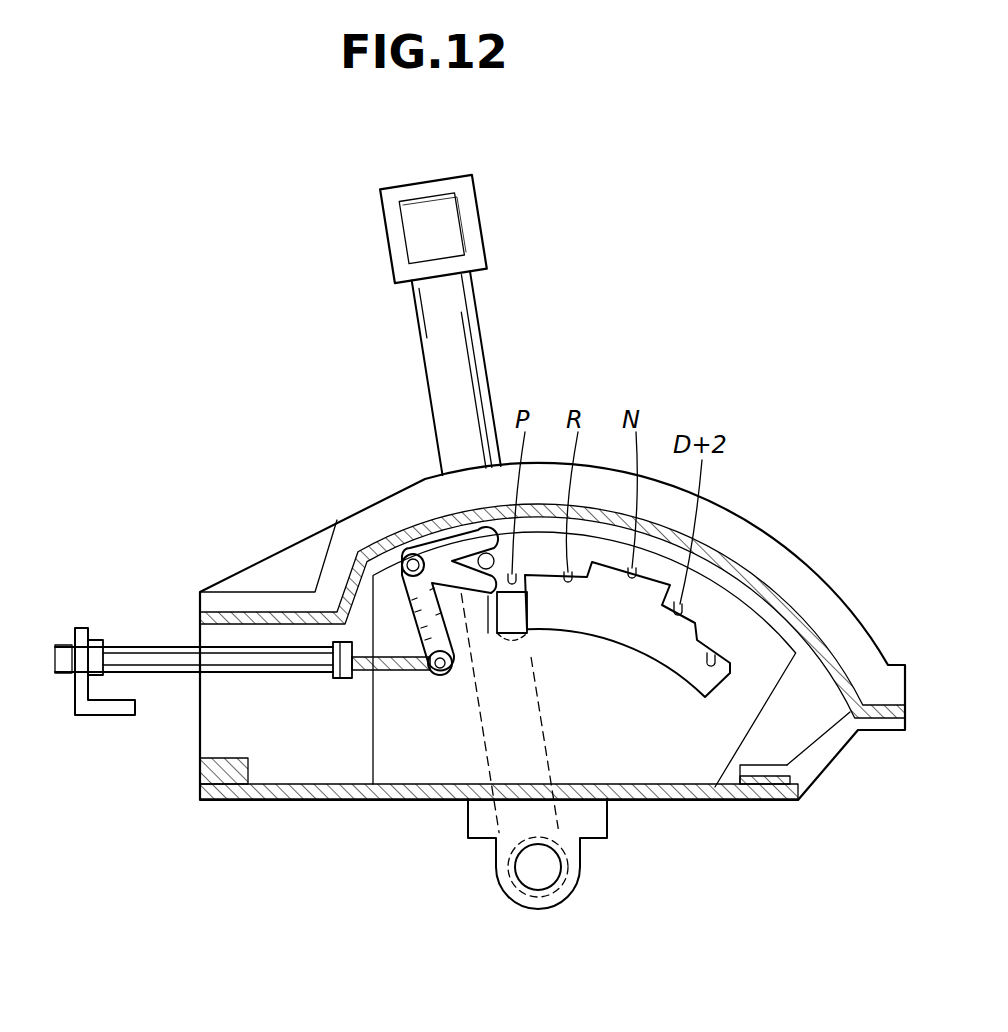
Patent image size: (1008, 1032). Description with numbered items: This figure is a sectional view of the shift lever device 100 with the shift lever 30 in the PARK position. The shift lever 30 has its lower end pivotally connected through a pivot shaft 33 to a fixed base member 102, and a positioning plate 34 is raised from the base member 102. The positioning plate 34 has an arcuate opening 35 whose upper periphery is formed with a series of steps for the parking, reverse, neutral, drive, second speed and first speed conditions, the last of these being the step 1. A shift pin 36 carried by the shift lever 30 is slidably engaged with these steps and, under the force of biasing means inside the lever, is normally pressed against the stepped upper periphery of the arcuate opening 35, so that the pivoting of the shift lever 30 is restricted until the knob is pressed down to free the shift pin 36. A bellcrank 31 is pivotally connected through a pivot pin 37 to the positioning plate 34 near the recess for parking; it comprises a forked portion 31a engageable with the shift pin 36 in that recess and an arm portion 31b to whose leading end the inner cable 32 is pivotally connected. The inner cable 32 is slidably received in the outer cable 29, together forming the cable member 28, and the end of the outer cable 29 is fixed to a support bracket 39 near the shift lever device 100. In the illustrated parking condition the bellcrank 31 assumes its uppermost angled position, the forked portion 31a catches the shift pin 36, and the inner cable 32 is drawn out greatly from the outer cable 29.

The shift lever device 100 is at (577, 344).
The shift lever 30 is at (418, 326).
The bellcrank 31 is at (447, 545).
The forked portion 31a is at (453, 556).
The arm portion 31b is at (410, 617).
The pivot pin 37 is at (400, 553).
The shift pin 36 is at (528, 647).
The arcuate opening 35 is at (606, 619).
The positioning plate 34 is at (750, 637).
The step "1" 1 is at (712, 655).
The pivot shaft 33 is at (545, 862).
The inner cable 32 is at (408, 620).
The outer cable 29 is at (176, 668).
The cable member 28 is at (140, 627).
The support bracket 39 is at (95, 714).
The base member 102 is at (700, 801).